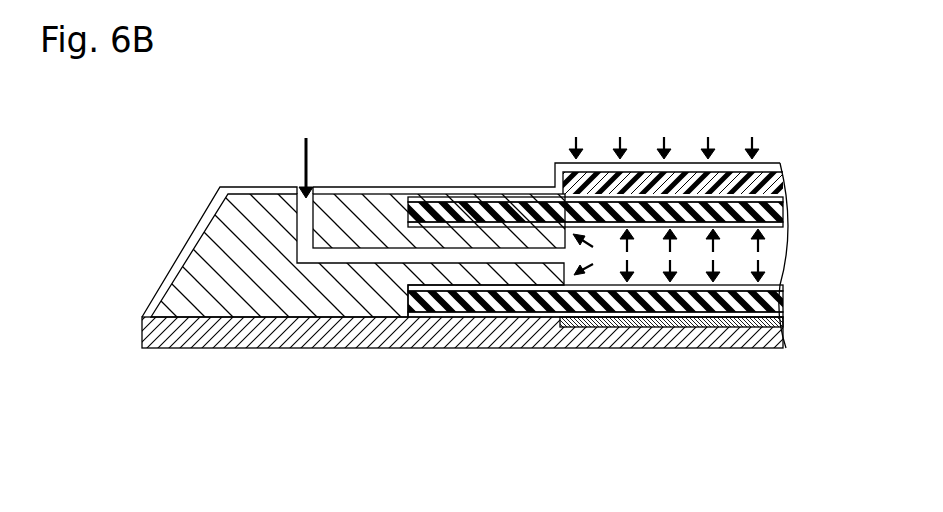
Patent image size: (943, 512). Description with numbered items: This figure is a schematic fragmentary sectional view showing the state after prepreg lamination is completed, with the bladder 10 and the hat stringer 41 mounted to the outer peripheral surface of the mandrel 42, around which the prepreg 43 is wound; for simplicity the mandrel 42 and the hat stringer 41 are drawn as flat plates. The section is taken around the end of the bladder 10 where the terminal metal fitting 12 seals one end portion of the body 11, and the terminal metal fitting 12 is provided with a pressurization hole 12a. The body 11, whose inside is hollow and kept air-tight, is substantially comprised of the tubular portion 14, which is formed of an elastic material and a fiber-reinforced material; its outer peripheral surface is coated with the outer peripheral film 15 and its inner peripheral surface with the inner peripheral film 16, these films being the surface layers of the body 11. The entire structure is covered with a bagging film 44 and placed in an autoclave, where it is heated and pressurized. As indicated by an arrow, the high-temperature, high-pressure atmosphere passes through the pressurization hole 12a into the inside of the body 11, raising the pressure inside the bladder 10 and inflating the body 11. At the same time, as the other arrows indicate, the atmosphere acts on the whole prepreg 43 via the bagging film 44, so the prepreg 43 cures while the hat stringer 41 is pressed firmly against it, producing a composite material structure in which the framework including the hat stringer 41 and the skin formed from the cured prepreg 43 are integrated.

The bladder 10 is at (243, 186).
The body 11 is at (595, 333).
The terminal metal fitting 12 is at (237, 307).
The pressurization hole 12a is at (401, 256).
The tubular portion 14 is at (552, 310).
The outer peripheral film 15 is at (583, 289).
The inner peripheral film 16 is at (519, 316).
The hat stringer 41 is at (712, 320).
The mandrel 42 is at (307, 346).
The prepreg 43 is at (554, 179).
The bagging film 44 is at (352, 188).